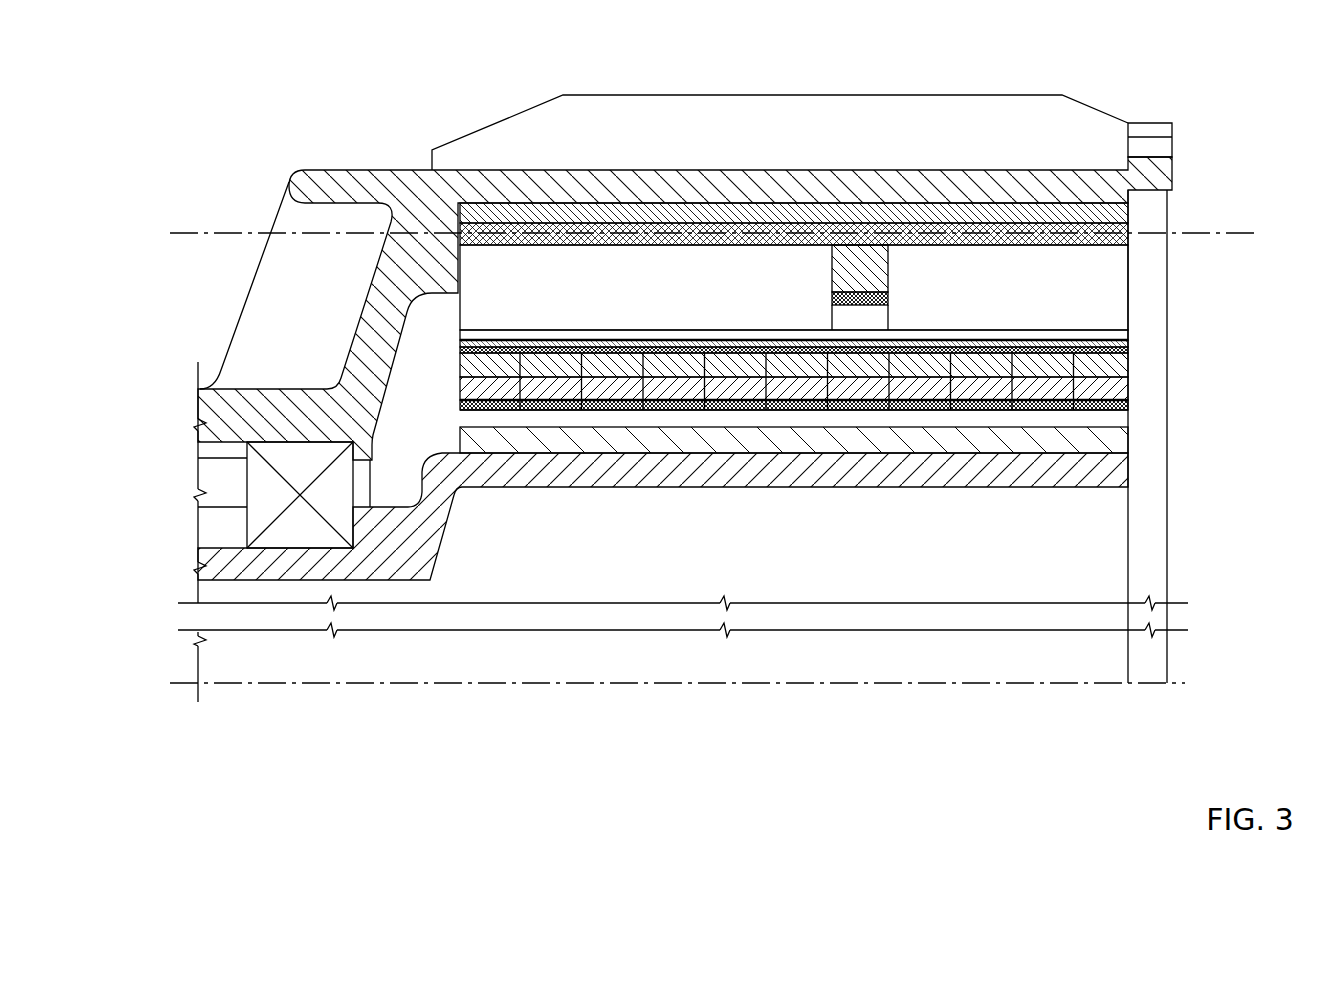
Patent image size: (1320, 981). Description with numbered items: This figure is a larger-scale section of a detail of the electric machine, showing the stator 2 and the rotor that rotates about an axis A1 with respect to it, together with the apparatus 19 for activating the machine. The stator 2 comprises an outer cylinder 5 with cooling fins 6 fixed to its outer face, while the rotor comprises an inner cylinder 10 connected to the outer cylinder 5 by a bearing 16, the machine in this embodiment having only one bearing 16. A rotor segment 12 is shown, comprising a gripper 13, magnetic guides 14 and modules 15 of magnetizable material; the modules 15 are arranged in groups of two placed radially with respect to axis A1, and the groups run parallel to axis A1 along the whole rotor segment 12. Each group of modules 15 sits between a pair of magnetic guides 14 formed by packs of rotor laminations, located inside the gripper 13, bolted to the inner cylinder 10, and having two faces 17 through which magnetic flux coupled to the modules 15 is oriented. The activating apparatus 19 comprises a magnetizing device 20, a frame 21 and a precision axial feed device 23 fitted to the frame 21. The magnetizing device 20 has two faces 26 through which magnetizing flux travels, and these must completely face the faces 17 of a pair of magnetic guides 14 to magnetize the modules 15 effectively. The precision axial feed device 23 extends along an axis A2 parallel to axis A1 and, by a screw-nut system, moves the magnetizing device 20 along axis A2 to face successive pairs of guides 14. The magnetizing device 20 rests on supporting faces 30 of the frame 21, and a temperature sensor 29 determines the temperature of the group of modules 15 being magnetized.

The stator 2 is at (863, 66).
The outer cylinder 5 is at (1152, 174).
The cooling fins 6 is at (925, 125).
The inner cylinder 10 is at (1118, 468).
The rotor segment 12 is at (448, 389).
The gripper 13 is at (1125, 338).
The magnetic guides 14 is at (607, 355).
The modules of magnetizable material 15 is at (535, 388).
The bearing 16 is at (258, 487).
The faces 17 is at (476, 328).
The apparatus for activating electric machine 19 is at (1112, 283).
The magnetizing device 20 is at (840, 318).
The frame 21 is at (1120, 210).
The precision axial feed device 23 is at (1132, 238).
The faces 26 is at (857, 350).
The temperature sensor 29 is at (862, 292).
The supporting faces 30 is at (687, 322).
The axis A1 is at (315, 684).
The axis A2 is at (182, 233).